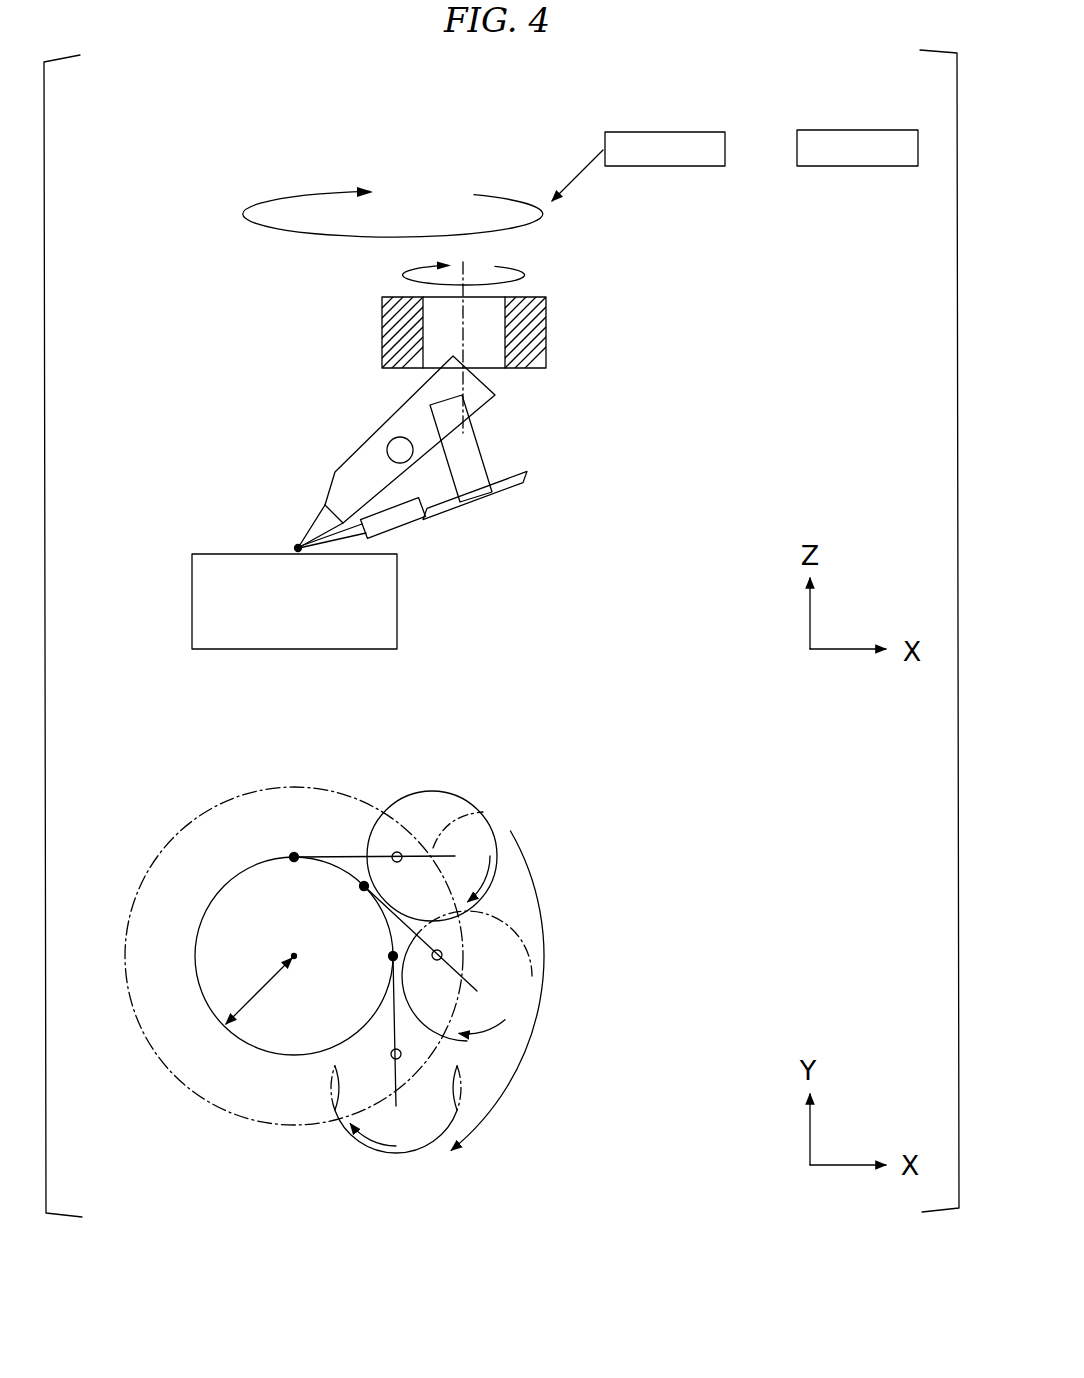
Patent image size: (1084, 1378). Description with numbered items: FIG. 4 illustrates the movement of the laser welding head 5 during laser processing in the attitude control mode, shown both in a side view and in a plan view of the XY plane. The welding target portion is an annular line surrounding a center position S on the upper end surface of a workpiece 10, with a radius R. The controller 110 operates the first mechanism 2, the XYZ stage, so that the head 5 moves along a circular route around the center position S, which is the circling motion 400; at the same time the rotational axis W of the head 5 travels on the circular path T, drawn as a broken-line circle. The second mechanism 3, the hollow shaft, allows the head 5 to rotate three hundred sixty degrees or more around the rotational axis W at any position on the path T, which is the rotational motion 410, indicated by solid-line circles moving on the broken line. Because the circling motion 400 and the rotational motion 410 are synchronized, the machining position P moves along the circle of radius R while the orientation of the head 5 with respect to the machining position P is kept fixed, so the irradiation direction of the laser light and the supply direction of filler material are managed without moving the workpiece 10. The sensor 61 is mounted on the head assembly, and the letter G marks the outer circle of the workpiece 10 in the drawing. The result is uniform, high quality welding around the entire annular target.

The first mechanism (XYZ stage) 2 is at (665, 132).
The controller 110 is at (858, 131).
The second mechanism (hollow shaft) 3 is at (543, 343).
The laser welding head 5 is at (392, 423).
The sensor 61 is at (407, 522).
The workpiece 10 is at (397, 615).
The circling motion 400 is at (305, 237).
The rotational motion 410 is at (403, 277).
The machining position P is at (298, 547).
The circular path T is at (337, 790).
The rotational axis W is at (488, 812).
The center position S is at (294, 955).
The workpiece outer circle G is at (194, 963).
The radius R is at (262, 988).